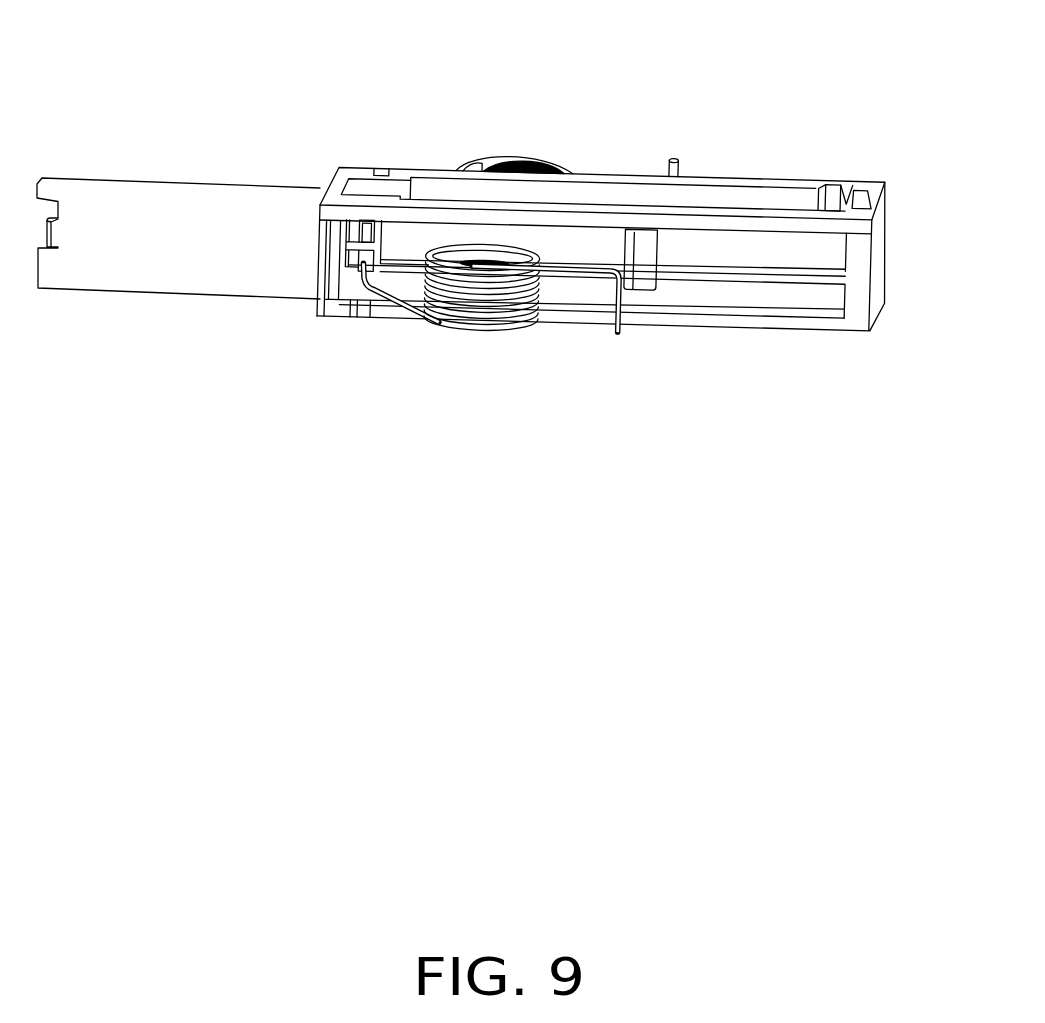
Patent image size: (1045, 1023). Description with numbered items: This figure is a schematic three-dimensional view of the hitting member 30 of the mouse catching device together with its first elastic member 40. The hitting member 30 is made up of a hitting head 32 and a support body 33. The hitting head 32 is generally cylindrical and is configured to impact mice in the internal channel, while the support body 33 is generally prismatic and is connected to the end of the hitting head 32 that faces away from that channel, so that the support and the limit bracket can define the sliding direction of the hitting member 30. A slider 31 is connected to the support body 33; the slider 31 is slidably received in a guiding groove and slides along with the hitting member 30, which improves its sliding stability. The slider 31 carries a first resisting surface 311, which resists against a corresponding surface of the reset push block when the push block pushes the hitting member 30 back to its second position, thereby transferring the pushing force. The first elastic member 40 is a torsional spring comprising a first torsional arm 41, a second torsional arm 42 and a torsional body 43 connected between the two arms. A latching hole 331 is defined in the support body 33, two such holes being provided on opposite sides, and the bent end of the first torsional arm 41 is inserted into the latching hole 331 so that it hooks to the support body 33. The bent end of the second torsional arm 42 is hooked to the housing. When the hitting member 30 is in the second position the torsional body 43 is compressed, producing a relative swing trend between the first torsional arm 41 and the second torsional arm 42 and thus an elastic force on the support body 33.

The hitting member 30 is at (479, 259).
The slider 31 is at (843, 183).
The first resisting surface 311 is at (817, 199).
The hitting head 32 is at (177, 268).
The support body 33 is at (792, 297).
The latching hole 331 is at (363, 265).
The first elastic member 40 is at (524, 338).
The first torsional arm 41 is at (397, 297).
The second torsional arm 42 is at (633, 323).
The torsional body 43 is at (513, 318).